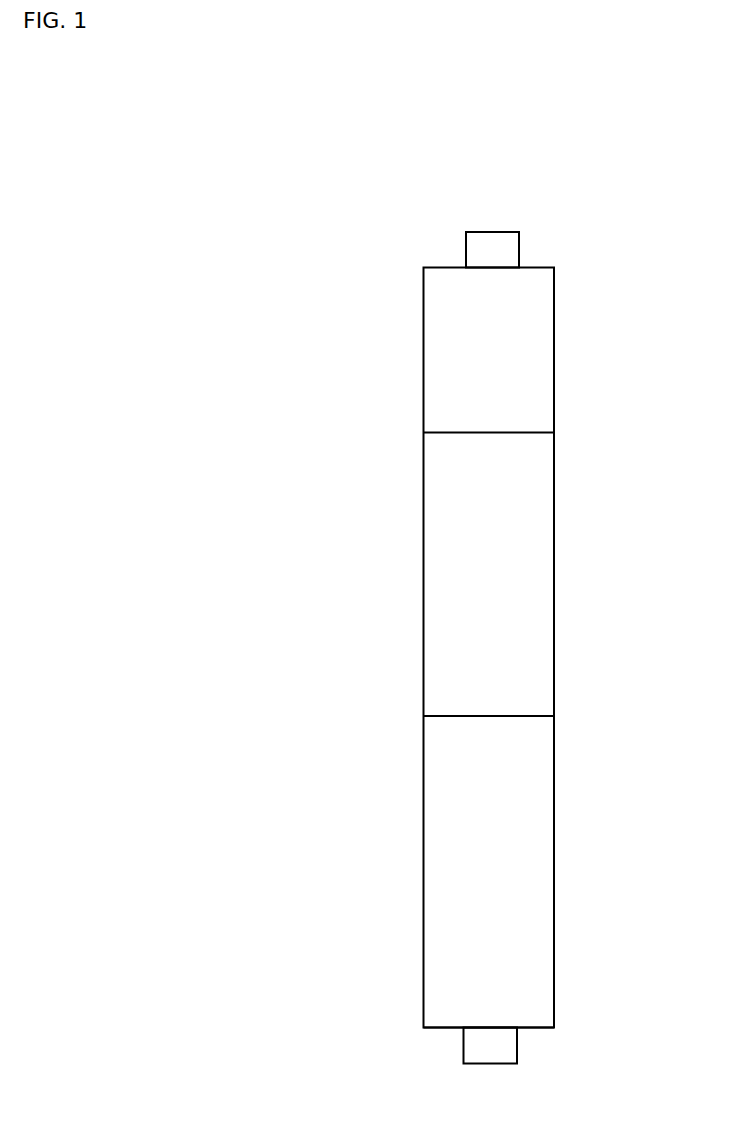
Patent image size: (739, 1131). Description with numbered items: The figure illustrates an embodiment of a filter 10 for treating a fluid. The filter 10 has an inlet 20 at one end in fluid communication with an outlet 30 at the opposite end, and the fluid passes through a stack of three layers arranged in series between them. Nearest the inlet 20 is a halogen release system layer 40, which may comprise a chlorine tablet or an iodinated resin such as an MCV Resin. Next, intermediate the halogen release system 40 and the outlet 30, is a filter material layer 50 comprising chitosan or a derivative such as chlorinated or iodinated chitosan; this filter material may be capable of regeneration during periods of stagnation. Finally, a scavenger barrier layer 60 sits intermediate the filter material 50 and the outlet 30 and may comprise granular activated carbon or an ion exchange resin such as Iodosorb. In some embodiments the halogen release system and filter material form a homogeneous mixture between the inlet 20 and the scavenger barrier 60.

The filter 10 is at (446, 183).
The inlet 20 is at (519, 250).
The outlet 30 is at (517, 1046).
The halogen release system layer 40 is at (554, 363).
The filter material layer 50 is at (554, 570).
The scavenger barrier layer 60 is at (554, 816).